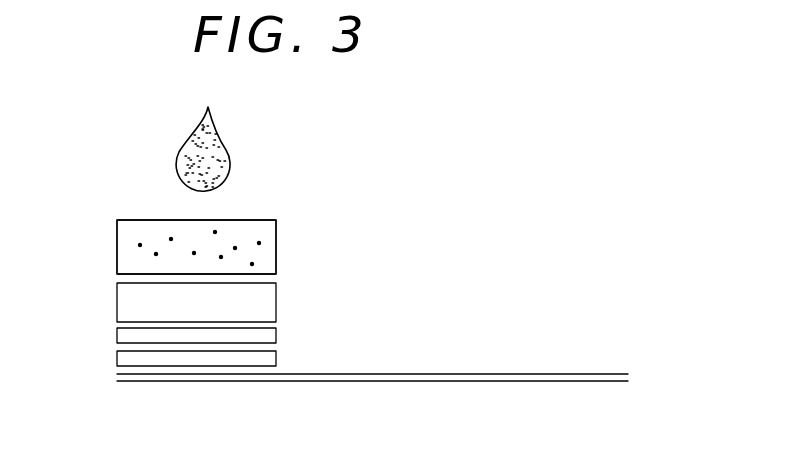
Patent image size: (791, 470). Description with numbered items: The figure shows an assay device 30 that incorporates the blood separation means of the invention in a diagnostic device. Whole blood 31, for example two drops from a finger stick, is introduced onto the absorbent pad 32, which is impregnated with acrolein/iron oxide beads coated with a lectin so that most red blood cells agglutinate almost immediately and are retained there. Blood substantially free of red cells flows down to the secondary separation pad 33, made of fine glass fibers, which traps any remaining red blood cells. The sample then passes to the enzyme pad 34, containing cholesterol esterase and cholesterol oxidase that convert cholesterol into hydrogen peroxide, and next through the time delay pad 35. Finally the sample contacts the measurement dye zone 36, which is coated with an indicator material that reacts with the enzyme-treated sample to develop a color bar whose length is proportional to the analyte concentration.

The assay device 30 is at (303, 200).
The whole blood 31 is at (220, 143).
The absorbent pad 32 is at (276, 249).
The secondary separation pad 33 is at (276, 303).
The enzyme pad 34 is at (276, 337).
The time delay pad 35 is at (117, 358).
The measurement dye zone 36 is at (427, 381).